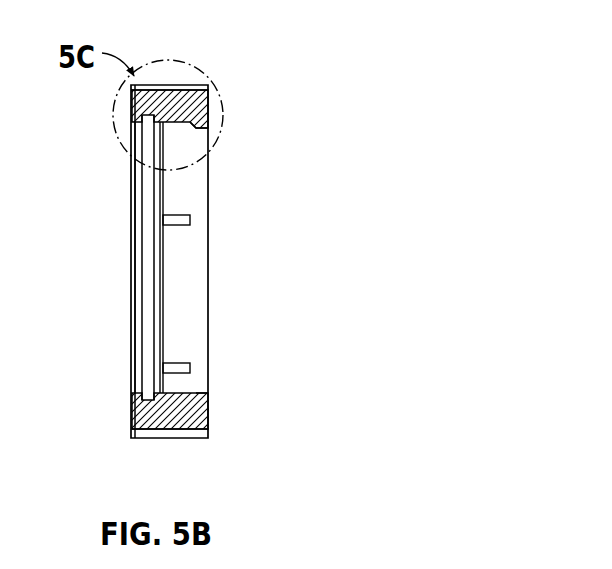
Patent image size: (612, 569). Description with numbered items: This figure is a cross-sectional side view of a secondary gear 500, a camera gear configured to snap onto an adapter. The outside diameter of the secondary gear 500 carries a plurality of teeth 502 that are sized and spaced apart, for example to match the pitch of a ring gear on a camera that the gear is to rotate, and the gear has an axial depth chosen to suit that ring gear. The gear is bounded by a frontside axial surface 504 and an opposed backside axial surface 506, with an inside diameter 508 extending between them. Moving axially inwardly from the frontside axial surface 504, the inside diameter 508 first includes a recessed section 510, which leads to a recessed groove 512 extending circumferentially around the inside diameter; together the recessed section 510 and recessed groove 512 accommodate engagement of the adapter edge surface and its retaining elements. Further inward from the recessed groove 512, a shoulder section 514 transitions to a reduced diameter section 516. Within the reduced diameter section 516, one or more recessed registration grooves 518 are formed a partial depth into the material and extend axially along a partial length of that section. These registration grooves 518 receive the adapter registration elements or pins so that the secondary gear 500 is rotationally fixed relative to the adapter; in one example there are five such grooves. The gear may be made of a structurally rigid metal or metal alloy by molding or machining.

The secondary gear 500 is at (362, 40).
The teeth 502 is at (188, 438).
The frontside axial surface 504 is at (132, 420).
The backside axial surface 506 is at (208, 103).
The inside diameter 508 is at (184, 388).
The recessed section 510 is at (140, 398).
The recessed groove 512 is at (148, 398).
The shoulder section 514 is at (153, 394).
The reduced diameter section 516 is at (207, 387).
The recessed registration grooves 518 is at (192, 130).